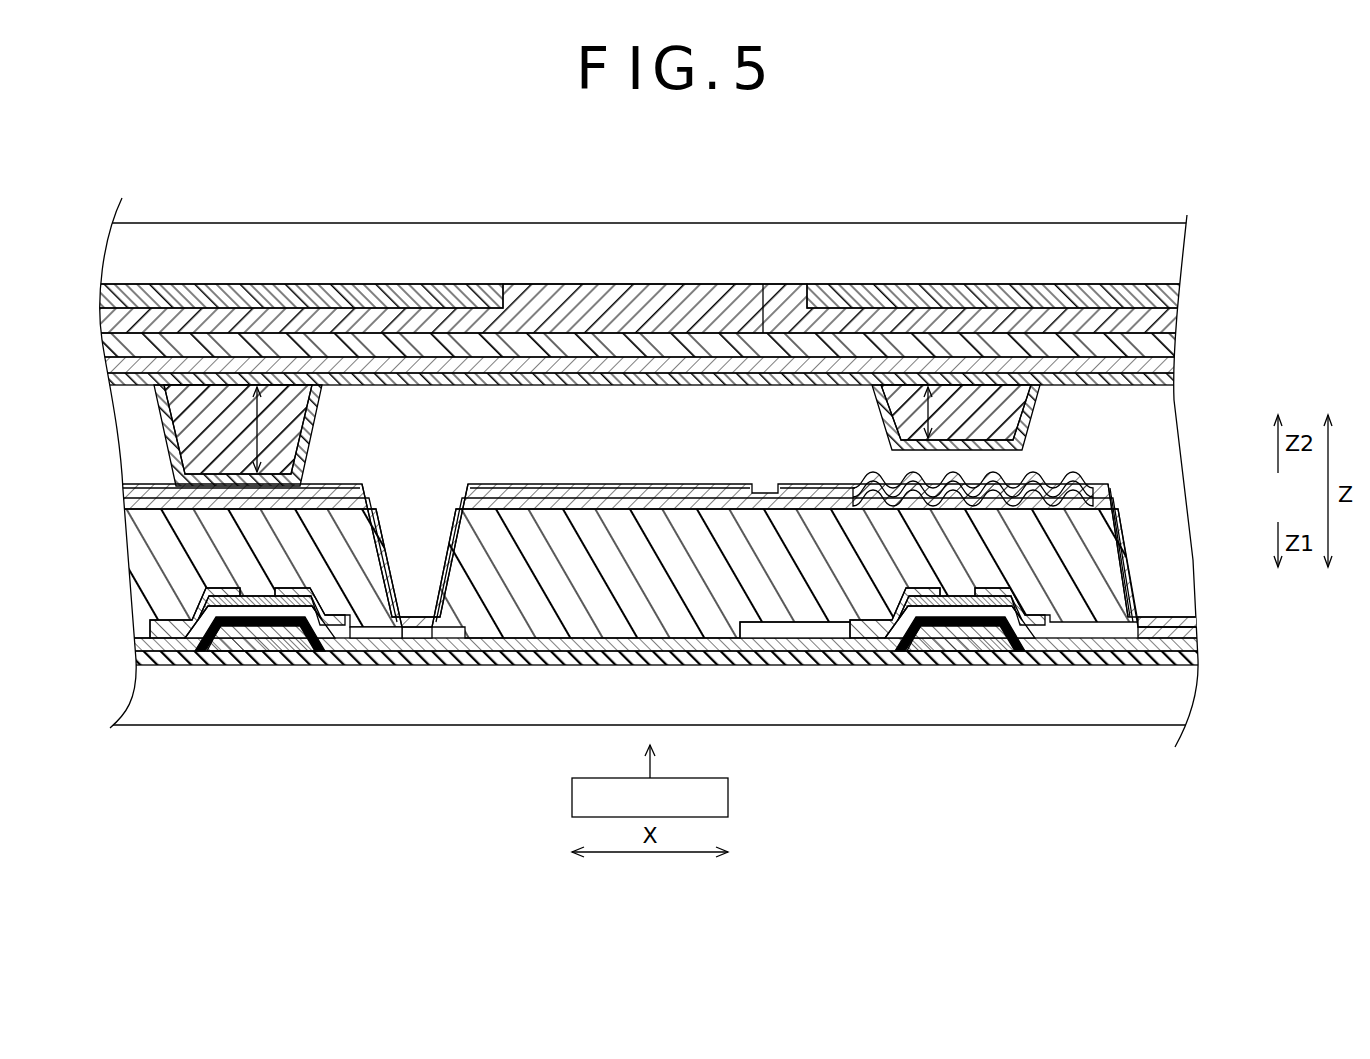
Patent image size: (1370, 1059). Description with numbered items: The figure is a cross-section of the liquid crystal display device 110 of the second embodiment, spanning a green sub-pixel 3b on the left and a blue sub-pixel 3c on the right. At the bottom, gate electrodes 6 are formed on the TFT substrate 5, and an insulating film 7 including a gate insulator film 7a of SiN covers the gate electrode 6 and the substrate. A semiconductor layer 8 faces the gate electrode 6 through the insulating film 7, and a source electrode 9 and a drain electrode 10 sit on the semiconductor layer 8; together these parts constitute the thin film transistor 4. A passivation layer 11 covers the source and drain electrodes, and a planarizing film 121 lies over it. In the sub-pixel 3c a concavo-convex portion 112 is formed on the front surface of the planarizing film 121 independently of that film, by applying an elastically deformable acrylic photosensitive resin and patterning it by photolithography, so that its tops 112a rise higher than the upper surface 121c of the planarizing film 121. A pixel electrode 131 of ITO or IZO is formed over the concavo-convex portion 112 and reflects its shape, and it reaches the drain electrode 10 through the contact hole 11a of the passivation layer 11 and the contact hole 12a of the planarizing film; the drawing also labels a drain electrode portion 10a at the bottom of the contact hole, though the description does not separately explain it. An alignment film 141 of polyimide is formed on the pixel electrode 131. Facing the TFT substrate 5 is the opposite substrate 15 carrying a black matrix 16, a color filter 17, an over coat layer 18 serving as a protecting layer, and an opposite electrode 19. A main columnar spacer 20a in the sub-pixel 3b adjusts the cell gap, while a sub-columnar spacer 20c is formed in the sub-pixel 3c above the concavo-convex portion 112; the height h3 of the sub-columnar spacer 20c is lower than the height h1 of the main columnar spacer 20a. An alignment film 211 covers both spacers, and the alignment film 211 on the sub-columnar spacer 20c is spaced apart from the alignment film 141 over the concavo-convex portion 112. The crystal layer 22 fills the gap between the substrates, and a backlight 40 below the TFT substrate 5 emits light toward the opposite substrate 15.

The liquid crystal display device 110 is at (1192, 182).
The sub-pixel 3b is at (775, 160).
The sub-pixel 3c is at (775, 132).
The opposite substrate 15 is at (1150, 258).
The black matrix 16 is at (1170, 297).
The color filter 17 is at (1172, 320).
The over coat layer 18 is at (1160, 345).
The opposite electrode 19 is at (1170, 367).
The alignment film 211 is at (1170, 378).
The main columnar spacer 20a is at (235, 407).
The sub-columnar spacer 20c is at (963, 400).
The height of main columnar spacer h1 is at (302, 410).
The height of sub-columnar spacer h3 is at (878, 412).
The crystal layer 22 is at (1160, 447).
The thin film transistor 4 is at (313, 565).
The TFT substrate 5 is at (1185, 695).
The gate electrode 6 is at (296, 640).
The insulating film 7 is at (1192, 658).
The gate insulator film 7a is at (262, 628).
The semiconductor layer 8 is at (235, 605).
The source electrode 9 is at (162, 630).
The drain electrode 10 is at (1192, 645).
The gate insulating film portion 10a is at (428, 634).
The passivation layer 11 is at (1078, 640).
The contact hole 11a is at (410, 620).
The contact hole 12a is at (370, 520).
The concavo-convex portion 112 is at (862, 480).
The tops of convex portions 112a is at (886, 473).
The planarizing film 121 is at (150, 595).
The upper surface of planarizing film 121c is at (693, 505).
The pixel electrode 131 is at (630, 490).
The alignment film 141 is at (1192, 603).
The backlight 40 is at (728, 798).